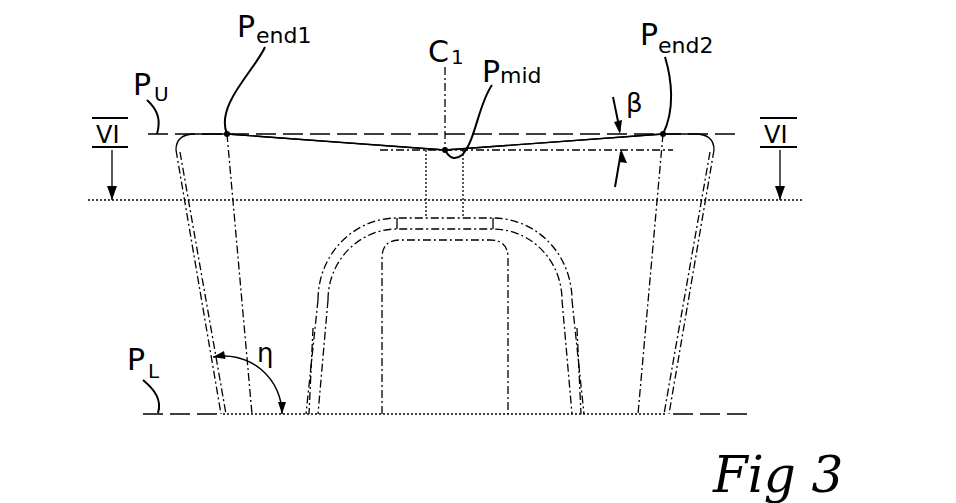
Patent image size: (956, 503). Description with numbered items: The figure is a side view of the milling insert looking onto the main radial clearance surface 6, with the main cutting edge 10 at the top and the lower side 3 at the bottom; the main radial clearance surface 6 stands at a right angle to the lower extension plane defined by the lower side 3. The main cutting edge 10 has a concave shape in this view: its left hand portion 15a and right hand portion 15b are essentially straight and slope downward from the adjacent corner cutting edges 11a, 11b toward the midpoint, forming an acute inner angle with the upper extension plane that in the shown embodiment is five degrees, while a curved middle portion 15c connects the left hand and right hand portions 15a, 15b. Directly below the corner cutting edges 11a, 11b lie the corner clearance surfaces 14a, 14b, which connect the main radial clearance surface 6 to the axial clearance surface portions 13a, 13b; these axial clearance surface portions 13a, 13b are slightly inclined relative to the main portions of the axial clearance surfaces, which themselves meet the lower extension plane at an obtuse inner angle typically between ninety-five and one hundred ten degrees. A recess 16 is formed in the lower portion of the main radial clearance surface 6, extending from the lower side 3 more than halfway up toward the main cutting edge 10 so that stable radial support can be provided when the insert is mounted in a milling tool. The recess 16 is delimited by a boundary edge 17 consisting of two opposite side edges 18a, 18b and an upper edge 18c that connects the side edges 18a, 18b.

The lower side 3 is at (597, 415).
The main radial clearance surface 6 is at (282, 233).
The main cutting edge 10 is at (387, 147).
The corner cutting edge 11a is at (208, 135).
The corner cutting edge 11b is at (695, 135).
The axial clearance surface portion 13a is at (207, 328).
The axial clearance surface portion 13b is at (685, 328).
The corner clearance surface 14a is at (213, 242).
The corner clearance surface 14b is at (677, 243).
The left hand portion of the main cutting edge 15a is at (310, 140).
The right hand portion of the main cutting edge 15b is at (578, 140).
The curved middle portion 15c is at (433, 150).
The recess 16 is at (468, 360).
The boundary edge 17 is at (572, 280).
The side edge 18a is at (312, 328).
The side edge 18b is at (582, 370).
The upper edge 18c is at (480, 217).